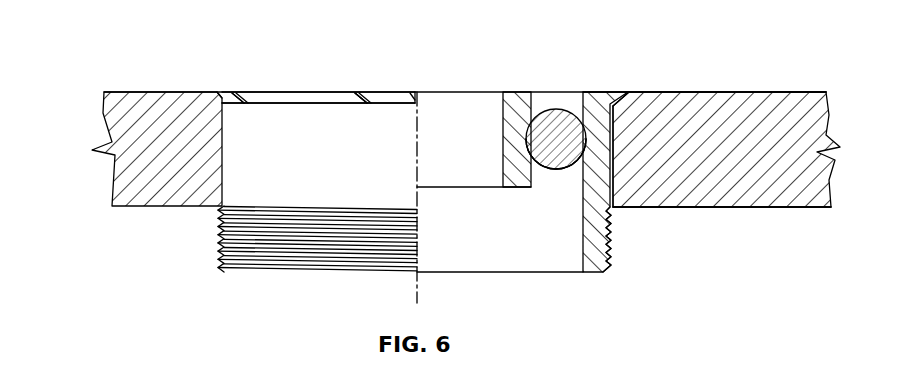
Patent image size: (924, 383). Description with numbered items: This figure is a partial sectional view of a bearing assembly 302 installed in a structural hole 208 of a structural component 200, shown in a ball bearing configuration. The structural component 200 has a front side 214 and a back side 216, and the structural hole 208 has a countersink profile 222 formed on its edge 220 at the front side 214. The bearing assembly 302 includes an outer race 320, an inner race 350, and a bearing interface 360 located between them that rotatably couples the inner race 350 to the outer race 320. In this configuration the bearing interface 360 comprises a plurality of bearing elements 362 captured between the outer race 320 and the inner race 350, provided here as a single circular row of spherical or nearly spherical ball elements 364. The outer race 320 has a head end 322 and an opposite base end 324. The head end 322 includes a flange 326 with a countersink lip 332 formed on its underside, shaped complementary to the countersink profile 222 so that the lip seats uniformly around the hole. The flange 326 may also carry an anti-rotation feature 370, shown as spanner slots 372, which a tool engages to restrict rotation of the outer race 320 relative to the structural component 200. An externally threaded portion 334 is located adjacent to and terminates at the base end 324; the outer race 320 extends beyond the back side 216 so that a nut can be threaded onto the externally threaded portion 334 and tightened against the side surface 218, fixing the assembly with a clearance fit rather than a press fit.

The structural component 200 is at (829, 119).
The structural hole 208 is at (613, 168).
The front side 214 is at (815, 92).
The back side 216 is at (817, 208).
The side surface 218 is at (697, 92).
The edge 220 is at (632, 91).
The countersink profile 222 is at (210, 100).
The bearing assembly 302 is at (348, 86).
The outer race 320 is at (592, 92).
The head end 322 is at (206, 97).
The base end 324 is at (227, 270).
The flange 326 is at (272, 92).
The countersink lip 332 is at (366, 92).
The externally threaded portion 334 is at (615, 249).
The inner race 350 is at (509, 92).
The bearing interface 360 is at (556, 102).
The bearing elements 362 is at (550, 165).
The ball elements 364 is at (556, 154).
The anti-rotation feature 370 is at (236, 92).
The spanner slots 372 is at (299, 98).